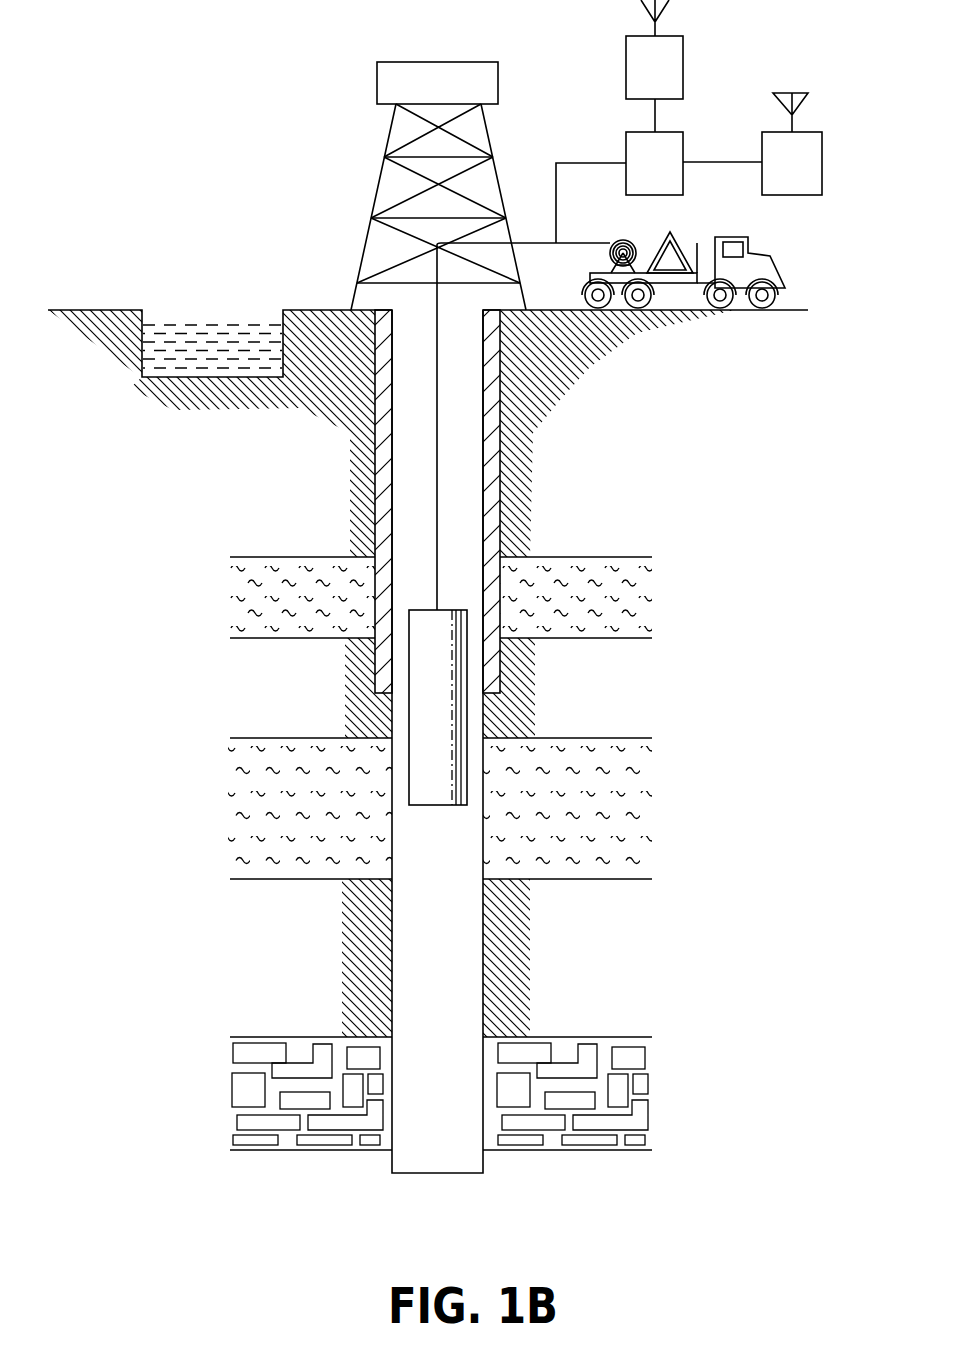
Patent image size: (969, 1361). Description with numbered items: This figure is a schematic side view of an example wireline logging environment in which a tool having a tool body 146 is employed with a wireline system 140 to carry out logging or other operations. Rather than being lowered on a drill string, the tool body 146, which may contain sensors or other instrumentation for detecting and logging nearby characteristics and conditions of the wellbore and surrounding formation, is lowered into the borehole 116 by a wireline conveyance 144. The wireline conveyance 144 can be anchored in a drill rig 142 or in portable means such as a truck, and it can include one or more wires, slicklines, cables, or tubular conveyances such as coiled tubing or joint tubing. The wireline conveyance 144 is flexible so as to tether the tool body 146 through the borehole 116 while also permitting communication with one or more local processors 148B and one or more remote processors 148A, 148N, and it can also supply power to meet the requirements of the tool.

The wireline system 140 is at (281, 48).
The drill rig 142 is at (508, 116).
The wireline conveyance 144 is at (437, 266).
The tool body 146 is at (427, 719).
The borehole 116 is at (483, 958).
The remote processor 148A is at (626, 47).
The local processor 148B is at (675, 132).
The remote processor 148N is at (813, 195).